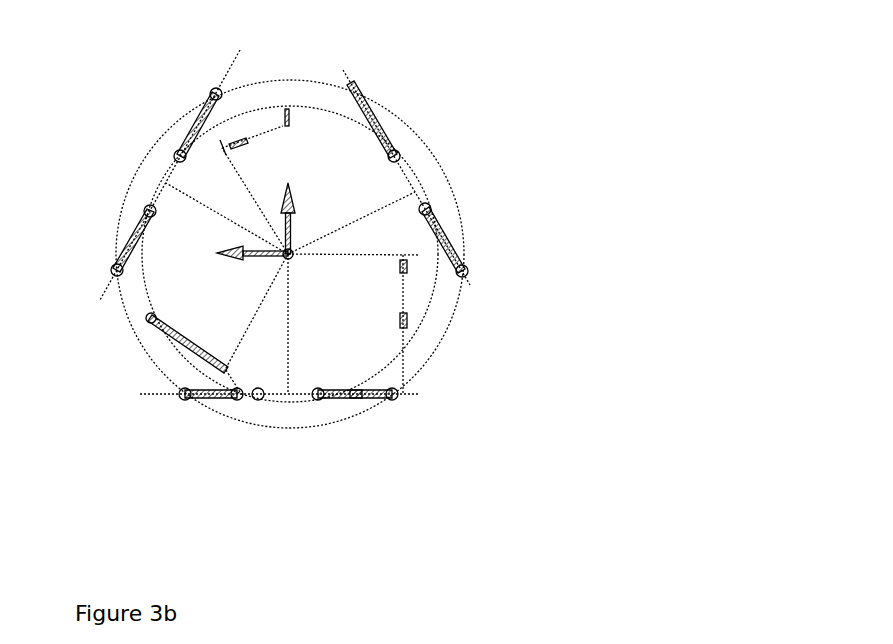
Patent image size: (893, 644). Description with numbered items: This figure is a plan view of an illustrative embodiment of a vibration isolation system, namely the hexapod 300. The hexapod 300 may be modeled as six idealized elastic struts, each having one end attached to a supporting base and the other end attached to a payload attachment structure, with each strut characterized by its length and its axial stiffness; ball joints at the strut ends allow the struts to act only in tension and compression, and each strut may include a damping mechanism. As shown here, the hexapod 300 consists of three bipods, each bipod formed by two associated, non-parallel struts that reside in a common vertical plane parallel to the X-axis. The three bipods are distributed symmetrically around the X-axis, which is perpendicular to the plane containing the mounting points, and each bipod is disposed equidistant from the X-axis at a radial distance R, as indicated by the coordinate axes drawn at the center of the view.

The hexapod 300 is at (510, 101).